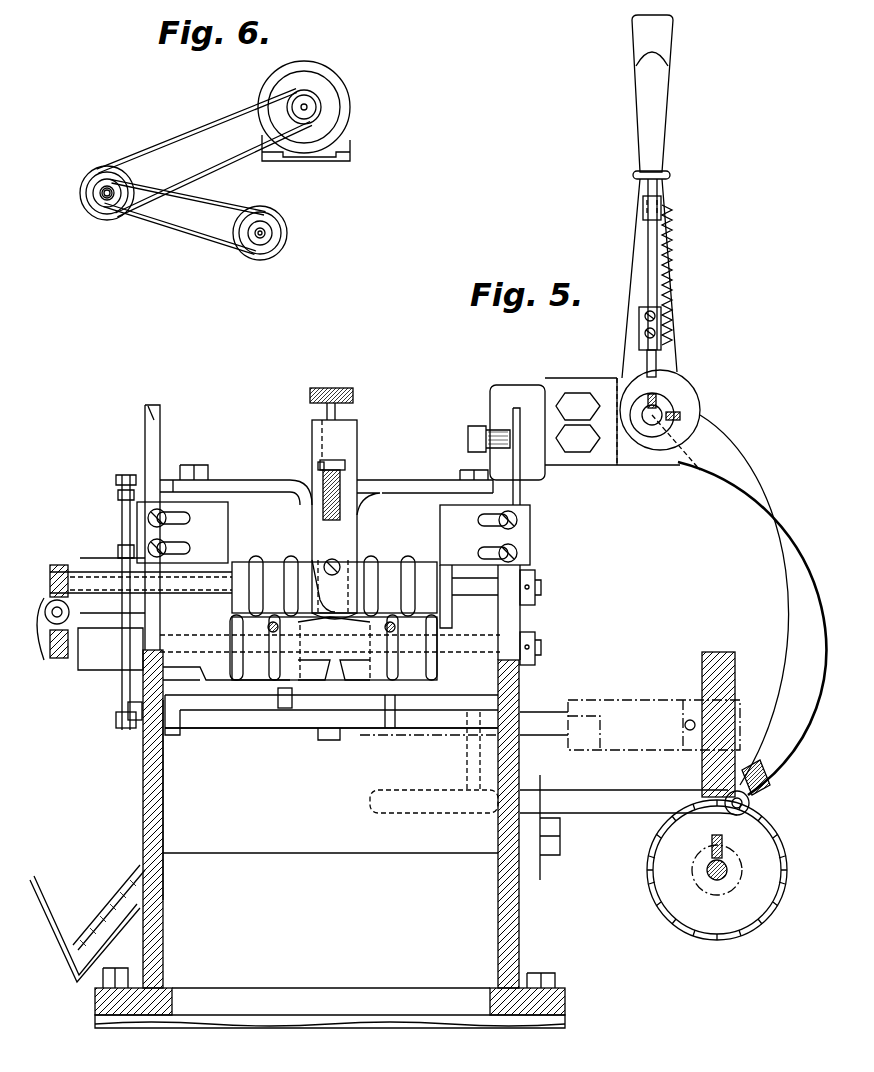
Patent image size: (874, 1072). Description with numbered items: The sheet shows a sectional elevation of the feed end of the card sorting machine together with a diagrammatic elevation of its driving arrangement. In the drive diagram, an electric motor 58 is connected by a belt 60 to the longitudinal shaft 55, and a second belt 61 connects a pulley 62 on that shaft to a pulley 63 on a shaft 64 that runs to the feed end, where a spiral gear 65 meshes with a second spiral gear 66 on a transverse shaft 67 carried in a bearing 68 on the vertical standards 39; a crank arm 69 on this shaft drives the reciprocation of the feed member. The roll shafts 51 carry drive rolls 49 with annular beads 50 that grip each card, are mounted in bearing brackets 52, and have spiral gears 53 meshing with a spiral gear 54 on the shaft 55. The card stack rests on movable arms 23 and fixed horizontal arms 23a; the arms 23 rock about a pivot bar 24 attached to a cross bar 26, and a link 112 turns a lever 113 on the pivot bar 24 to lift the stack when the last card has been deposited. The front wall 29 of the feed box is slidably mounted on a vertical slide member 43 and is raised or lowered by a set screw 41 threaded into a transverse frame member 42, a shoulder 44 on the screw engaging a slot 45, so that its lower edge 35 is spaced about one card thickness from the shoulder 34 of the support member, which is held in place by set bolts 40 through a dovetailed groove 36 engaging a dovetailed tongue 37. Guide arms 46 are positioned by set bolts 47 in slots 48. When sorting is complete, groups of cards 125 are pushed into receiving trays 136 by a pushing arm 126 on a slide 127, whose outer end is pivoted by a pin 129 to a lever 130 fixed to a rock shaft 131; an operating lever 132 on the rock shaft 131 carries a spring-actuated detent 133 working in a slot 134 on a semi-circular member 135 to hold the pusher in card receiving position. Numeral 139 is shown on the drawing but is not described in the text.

In FIG. 6, the electric motor 58 is at (346, 100).
In FIG. 6, the belt 60 is at (230, 120).
In FIG. 6, the second belt 61 is at (250, 200).
In FIG. 6, the pulley 62 is at (94, 204).
In FIG. 6, the longitudinal shaft 55 is at (106, 197).
In FIG. 5, the longitudinal shaft 55 is at (70, 604).
In FIG. 6, the pulley 63 is at (280, 231).
In FIG. 6, the shaft 64 is at (262, 236).
In FIG. 5, the shaft 64 is at (712, 876).
In FIG. 5, the operating lever 132 is at (640, 250).
In FIG. 5, the spring-actuated detent 133 is at (660, 344).
In FIG. 5, the slot 134 is at (658, 362).
In FIG. 5, the semi-circular member 135 is at (700, 390).
In FIG. 5, the ring 139 is at (690, 412).
In FIG. 5, the rock shaft 131 is at (652, 425).
In FIG. 5, the lever 130 is at (742, 478).
In FIG. 5, the set screw 41 is at (338, 400).
In FIG. 5, the vertical slide member 43 is at (312, 446).
In FIG. 5, the shoulder 44 is at (318, 467).
In FIG. 5, the slot 45 is at (342, 462).
In FIG. 5, the transverse frame member 42 is at (396, 486).
In FIG. 5, the front wall 29 is at (350, 542).
In FIG. 5, the lower edge 35 is at (318, 556).
In FIG. 5, the lever 113 is at (122, 522).
In FIG. 5, the spiral gear 54 is at (45, 580).
In FIG. 5, the bearing bracket 52 is at (80, 668).
In FIG. 5, the spiral gear 53 is at (44, 662).
In FIG. 5, the link 112 is at (120, 728).
In FIG. 5, the pivot bar 24 is at (135, 726).
In FIG. 5, the drive rolls 49 is at (386, 566).
In FIG. 5, the annular beads 50 is at (398, 566).
In FIG. 5, the horizontal arms 23a is at (272, 620).
In FIG. 5, the movable arms 23 is at (232, 636).
In FIG. 5, the dovetailed tongue 37 is at (320, 680).
In FIG. 5, the shoulder 34 is at (330, 690).
In FIG. 5, the set bolts 40 is at (285, 692).
In FIG. 5, the dovetailed groove 36 is at (232, 700).
In FIG. 5, the cross bar 26 is at (227, 730).
In FIG. 5, the crank arm 69 is at (328, 745).
In FIG. 5, the pushing arm 126 is at (468, 765).
In FIG. 5, the vertical standards 39 is at (164, 802).
In FIG. 5, the set bolts 47 is at (518, 520).
In FIG. 5, the slots 48 is at (500, 553).
In FIG. 5, the guide arms 46 is at (450, 585).
In FIG. 5, the shafts 51 is at (542, 645).
In FIG. 5, the transverse shaft 67 is at (552, 712).
In FIG. 5, the bearing 68 is at (656, 684).
In FIG. 5, the second spiral gear 66 is at (712, 655).
In FIG. 5, the slide 127 is at (638, 812).
In FIG. 5, the pin 129 is at (750, 803).
In FIG. 5, the spiral gear 65 is at (742, 918).
In FIG. 5, the groups of cards 125 is at (108, 904).
In FIG. 5, the receiving trays 136 is at (62, 945).